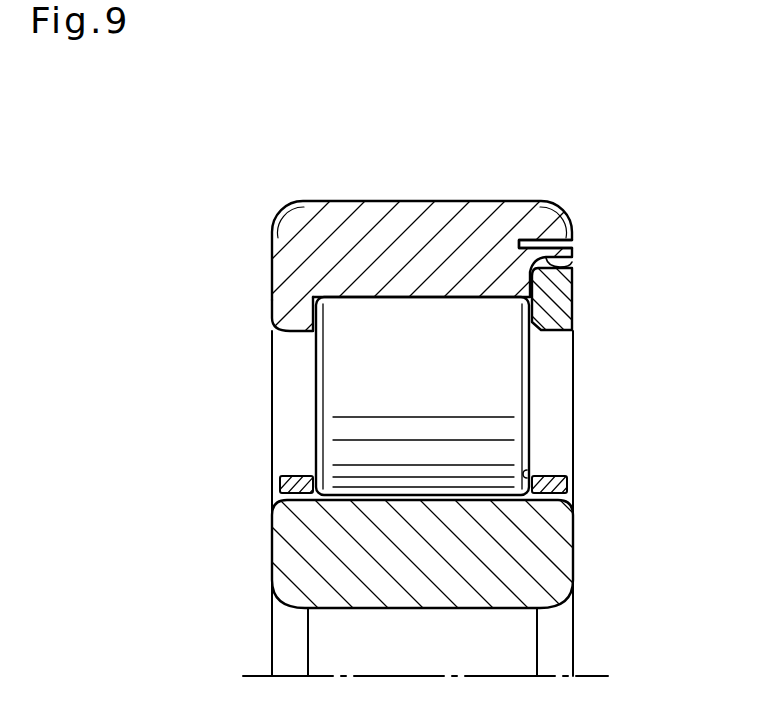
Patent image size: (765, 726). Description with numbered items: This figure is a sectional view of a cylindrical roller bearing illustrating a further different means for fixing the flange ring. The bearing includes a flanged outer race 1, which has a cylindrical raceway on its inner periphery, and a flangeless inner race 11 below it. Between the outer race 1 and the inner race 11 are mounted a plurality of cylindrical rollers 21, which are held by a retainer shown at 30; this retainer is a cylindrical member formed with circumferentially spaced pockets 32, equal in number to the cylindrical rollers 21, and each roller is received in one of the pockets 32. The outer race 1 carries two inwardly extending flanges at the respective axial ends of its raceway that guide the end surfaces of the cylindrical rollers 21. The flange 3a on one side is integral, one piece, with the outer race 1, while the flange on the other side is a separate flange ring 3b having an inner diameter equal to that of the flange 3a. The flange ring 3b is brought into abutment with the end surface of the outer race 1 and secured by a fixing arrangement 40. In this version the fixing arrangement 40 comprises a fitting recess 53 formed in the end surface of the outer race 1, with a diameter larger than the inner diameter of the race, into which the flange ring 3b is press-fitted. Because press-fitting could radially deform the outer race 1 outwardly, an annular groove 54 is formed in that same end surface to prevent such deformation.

The outer race 1 is at (320, 210).
The flange 3a is at (283, 285).
The flange ring 3b is at (562, 308).
The inner race 11 is at (288, 556).
The cylindrical rollers 21 is at (337, 378).
The cage 30 is at (568, 483).
The pockets 32 is at (530, 465).
The fixing arrangement 40 is at (555, 265).
The fitting recess 53 is at (565, 279).
The annular groove 54 is at (540, 245).